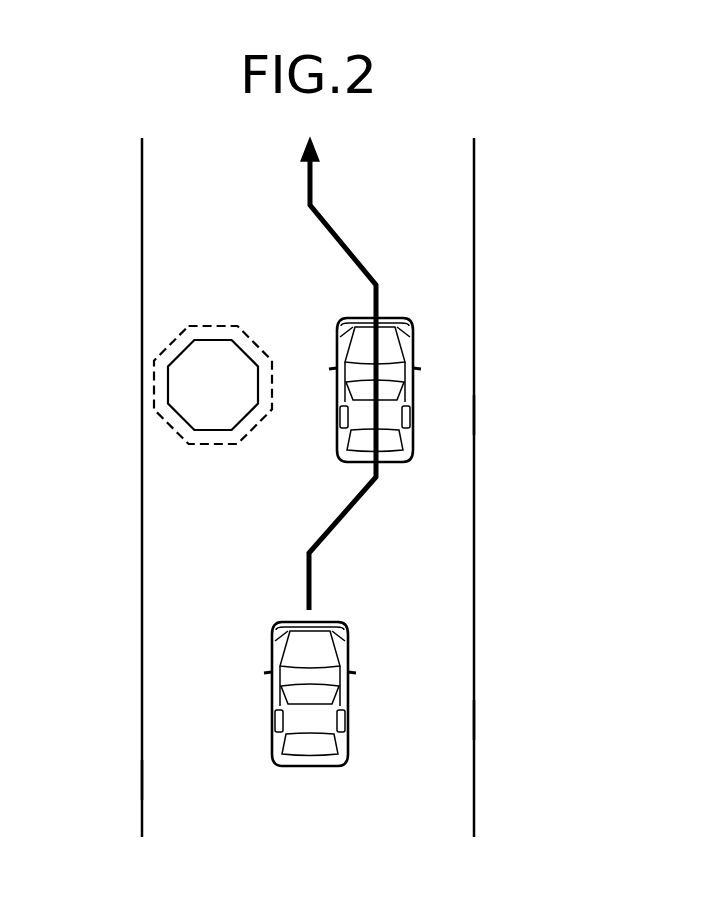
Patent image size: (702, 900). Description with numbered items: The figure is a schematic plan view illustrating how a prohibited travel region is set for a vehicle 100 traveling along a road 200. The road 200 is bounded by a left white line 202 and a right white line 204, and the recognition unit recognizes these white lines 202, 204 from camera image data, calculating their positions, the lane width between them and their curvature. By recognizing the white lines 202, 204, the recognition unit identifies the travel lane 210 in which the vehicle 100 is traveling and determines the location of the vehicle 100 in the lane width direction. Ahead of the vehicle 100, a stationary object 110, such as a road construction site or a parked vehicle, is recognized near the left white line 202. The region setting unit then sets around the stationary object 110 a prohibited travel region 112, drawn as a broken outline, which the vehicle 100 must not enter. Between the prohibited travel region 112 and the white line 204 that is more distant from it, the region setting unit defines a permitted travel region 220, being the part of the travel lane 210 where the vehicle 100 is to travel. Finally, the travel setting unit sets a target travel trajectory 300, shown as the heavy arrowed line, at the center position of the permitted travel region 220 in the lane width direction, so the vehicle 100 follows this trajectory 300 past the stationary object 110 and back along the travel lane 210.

The vehicle 100 is at (420, 364).
The stationary object 110 is at (170, 386).
The prohibited travel region 112 is at (170, 426).
The road 200 is at (440, 717).
The left white line 202 is at (142, 655).
The right white line 204 is at (474, 656).
The travel lane 210 is at (175, 780).
The permitted travel region 220 is at (440, 415).
The target travel trajectory 300 is at (379, 300).